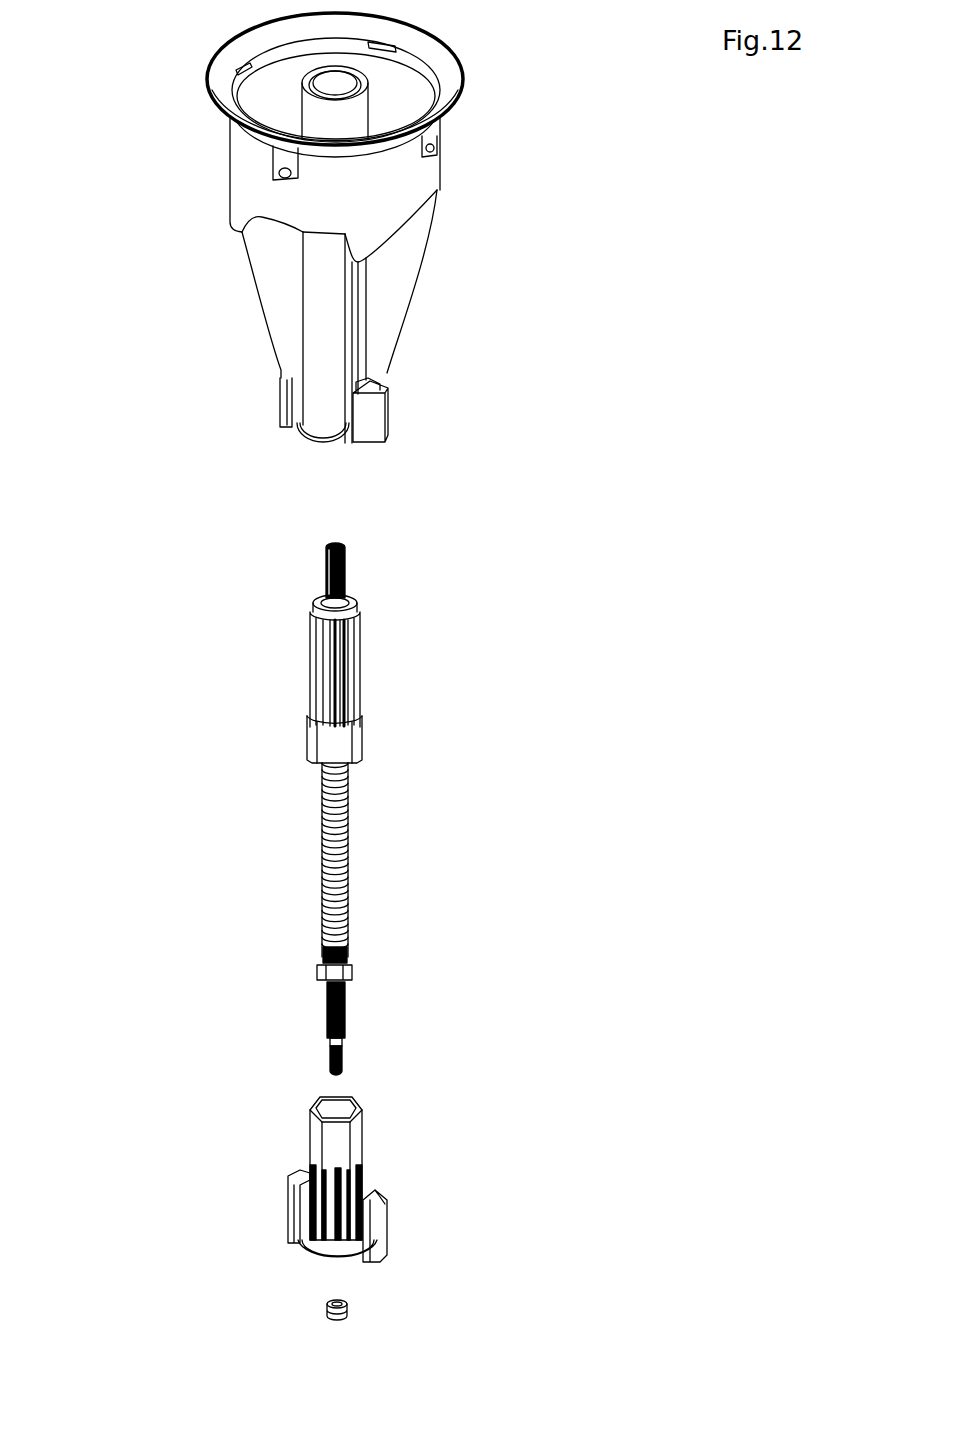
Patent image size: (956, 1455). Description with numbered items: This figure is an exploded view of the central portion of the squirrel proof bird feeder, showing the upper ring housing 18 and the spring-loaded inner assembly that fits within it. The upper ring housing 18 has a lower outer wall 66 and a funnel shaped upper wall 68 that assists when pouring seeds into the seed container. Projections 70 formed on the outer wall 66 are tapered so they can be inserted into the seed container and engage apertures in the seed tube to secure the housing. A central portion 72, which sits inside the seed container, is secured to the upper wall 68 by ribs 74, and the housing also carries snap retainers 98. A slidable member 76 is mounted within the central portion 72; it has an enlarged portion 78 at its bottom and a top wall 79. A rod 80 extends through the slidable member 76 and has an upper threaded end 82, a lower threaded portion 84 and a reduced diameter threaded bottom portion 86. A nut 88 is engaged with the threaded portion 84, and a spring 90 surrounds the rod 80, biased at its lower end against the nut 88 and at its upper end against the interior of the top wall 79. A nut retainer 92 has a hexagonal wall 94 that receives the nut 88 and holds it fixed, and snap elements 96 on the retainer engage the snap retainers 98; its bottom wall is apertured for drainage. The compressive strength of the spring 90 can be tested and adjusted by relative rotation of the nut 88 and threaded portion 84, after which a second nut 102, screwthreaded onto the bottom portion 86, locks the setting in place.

The upper ring housing 18 is at (180, 169).
The lower outer wall 66 is at (378, 219).
The upper wall 68 is at (433, 53).
The projections 70 is at (278, 176).
The central portion 72 is at (322, 392).
The ribs 74 is at (283, 296).
The slidable member 76 is at (357, 656).
The enlarged portion 78 is at (350, 747).
The top wall 79 is at (357, 600).
The rod 80 is at (347, 785).
The upper threaded end 82 is at (346, 568).
The lower threaded portion 84 is at (347, 1008).
The reduced diameter threaded bottom portion 86 is at (345, 1058).
The nut 88 is at (356, 970).
The spring 90 is at (335, 812).
The nut retainer 92 is at (255, 1116).
The hexagonal wall 94 is at (357, 1133).
The snap elements 96 is at (288, 1190).
The snap retainers 98 is at (278, 407).
The second nut 102 is at (348, 1308).